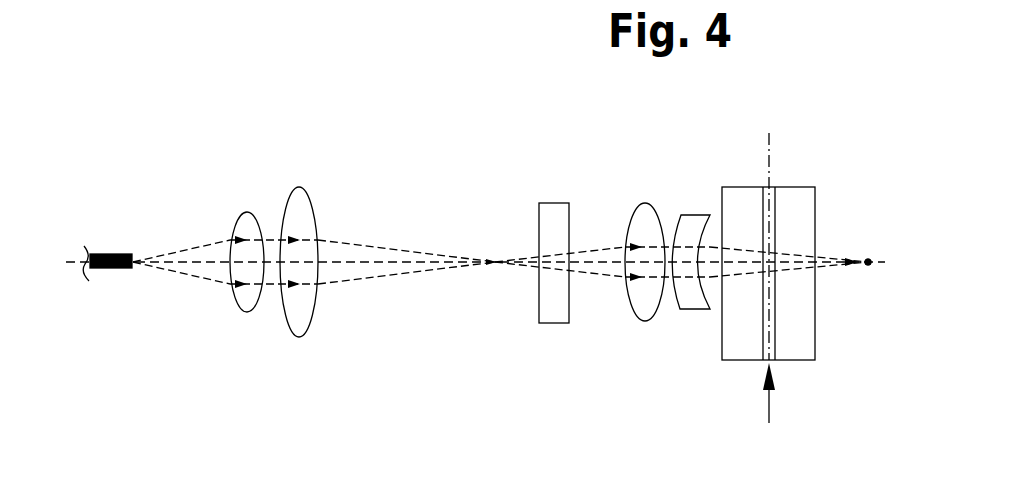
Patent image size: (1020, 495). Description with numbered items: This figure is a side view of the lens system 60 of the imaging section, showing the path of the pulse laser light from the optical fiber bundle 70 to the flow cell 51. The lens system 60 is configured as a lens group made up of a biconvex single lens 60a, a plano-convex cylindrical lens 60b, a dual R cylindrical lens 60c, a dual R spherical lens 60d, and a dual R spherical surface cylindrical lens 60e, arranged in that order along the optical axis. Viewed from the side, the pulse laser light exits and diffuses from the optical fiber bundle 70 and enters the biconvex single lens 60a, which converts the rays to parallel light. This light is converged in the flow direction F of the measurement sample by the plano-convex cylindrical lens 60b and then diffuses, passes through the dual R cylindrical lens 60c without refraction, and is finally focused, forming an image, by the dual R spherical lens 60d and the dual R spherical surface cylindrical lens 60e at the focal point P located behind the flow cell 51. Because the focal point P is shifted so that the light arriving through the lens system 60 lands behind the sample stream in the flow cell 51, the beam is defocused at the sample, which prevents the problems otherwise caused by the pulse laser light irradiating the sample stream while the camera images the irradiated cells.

The optical fiber bundle 70 is at (112, 268).
The lens system 60 is at (452, 218).
The biconvex single lens 60a is at (243, 312).
The plano-convex cylindrical lens 60b is at (299, 337).
The dual R cylindrical lens 60c is at (549, 323).
The dual R spherical lens 60d is at (645, 322).
The dual R spherical surface cylindrical lens 60e is at (690, 310).
The flow cell 51 is at (815, 345).
The flow direction F is at (770, 412).
The focal point P is at (861, 253).